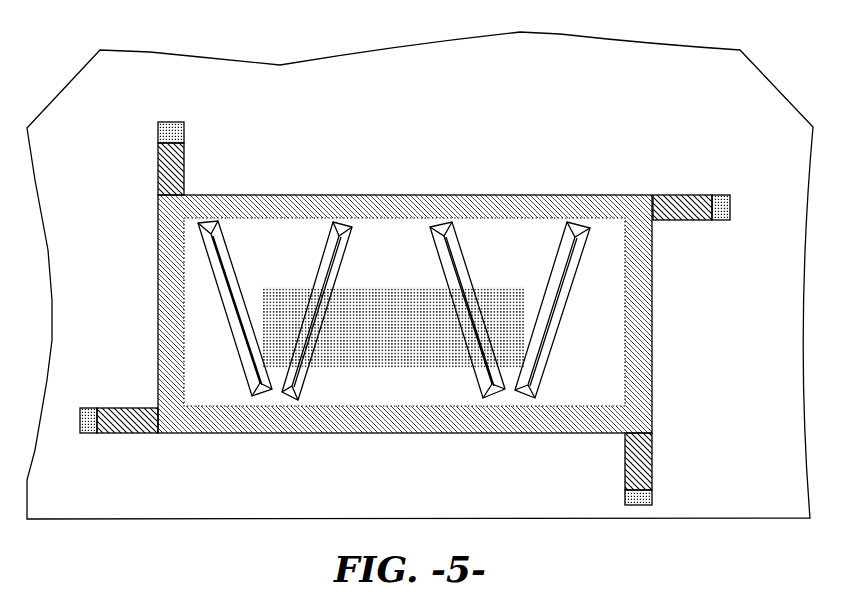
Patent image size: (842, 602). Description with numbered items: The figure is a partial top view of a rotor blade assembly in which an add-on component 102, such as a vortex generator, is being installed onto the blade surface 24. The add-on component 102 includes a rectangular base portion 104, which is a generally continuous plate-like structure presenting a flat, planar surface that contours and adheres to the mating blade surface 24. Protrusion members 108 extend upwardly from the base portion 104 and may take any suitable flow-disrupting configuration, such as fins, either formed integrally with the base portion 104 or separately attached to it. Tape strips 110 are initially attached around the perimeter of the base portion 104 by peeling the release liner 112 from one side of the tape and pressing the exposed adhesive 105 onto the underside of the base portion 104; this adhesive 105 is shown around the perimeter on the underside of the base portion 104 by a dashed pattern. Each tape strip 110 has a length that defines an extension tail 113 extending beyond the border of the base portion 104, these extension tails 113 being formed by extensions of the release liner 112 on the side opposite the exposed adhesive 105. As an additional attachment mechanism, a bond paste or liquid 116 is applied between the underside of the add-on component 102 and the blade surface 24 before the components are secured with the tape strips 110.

The blade surface 24 is at (278, 80).
The add-on component 102 is at (465, 188).
The base portion 104 is at (404, 267).
The adhesive 105 is at (180, 186).
The protrusion member 108 is at (227, 272).
The tape strips 110 is at (122, 435).
The release liner 112 is at (173, 132).
The extension tail 113 is at (158, 165).
The bond paste or liquid 116 is at (390, 345).